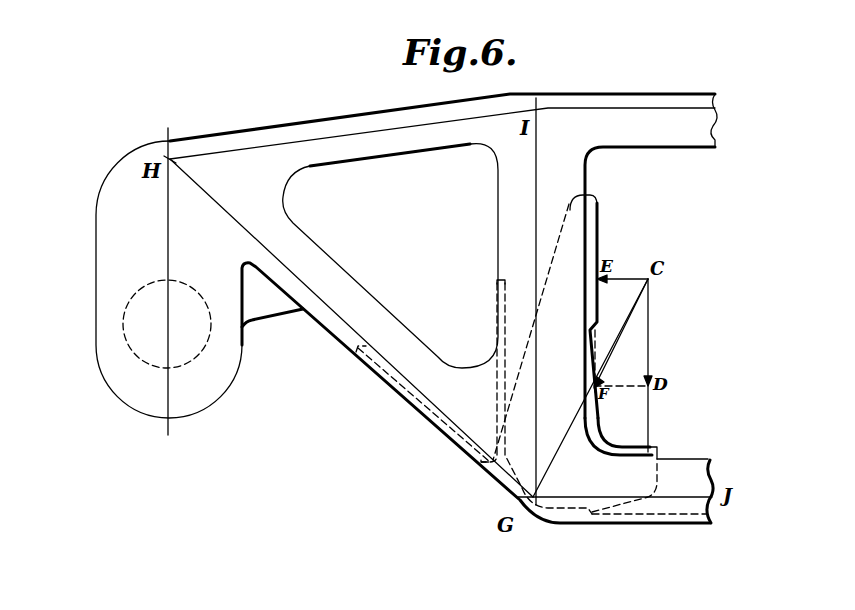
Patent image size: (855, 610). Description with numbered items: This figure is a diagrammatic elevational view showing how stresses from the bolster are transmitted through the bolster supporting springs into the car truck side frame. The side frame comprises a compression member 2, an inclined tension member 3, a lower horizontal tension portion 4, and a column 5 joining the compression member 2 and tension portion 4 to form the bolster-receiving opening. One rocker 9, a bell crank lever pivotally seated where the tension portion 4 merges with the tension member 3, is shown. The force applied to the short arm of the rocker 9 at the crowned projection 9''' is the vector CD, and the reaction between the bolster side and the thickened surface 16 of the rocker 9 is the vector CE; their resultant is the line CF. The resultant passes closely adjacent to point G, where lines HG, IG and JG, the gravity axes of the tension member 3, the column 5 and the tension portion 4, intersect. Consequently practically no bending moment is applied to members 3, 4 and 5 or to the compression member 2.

The compression member 2 is at (675, 137).
The inclined tension member 3 is at (403, 333).
The lower horizontal tension portion 4 is at (692, 507).
The column 5 is at (498, 252).
The rocker member 9 is at (566, 397).
The curved or crowned portion of the short arm 9''' is at (639, 469).
The thickened portion of the rocker arm 16 is at (588, 257).